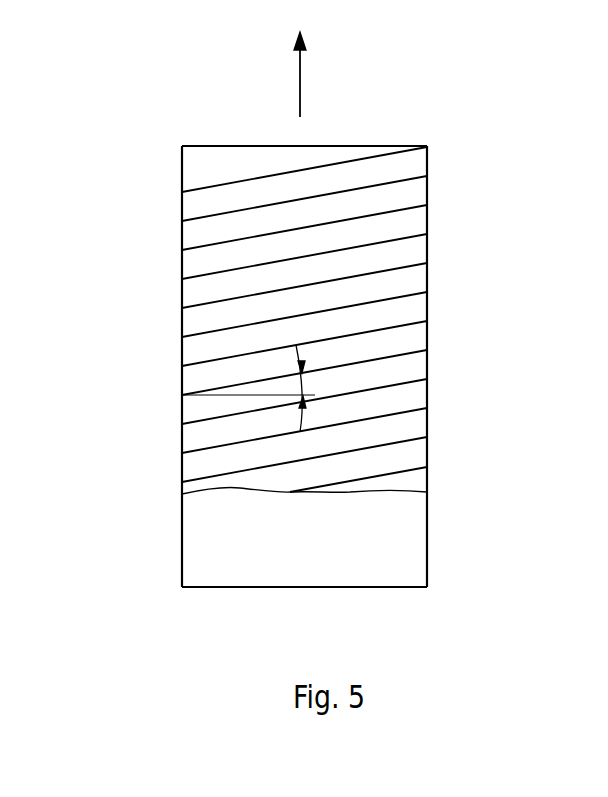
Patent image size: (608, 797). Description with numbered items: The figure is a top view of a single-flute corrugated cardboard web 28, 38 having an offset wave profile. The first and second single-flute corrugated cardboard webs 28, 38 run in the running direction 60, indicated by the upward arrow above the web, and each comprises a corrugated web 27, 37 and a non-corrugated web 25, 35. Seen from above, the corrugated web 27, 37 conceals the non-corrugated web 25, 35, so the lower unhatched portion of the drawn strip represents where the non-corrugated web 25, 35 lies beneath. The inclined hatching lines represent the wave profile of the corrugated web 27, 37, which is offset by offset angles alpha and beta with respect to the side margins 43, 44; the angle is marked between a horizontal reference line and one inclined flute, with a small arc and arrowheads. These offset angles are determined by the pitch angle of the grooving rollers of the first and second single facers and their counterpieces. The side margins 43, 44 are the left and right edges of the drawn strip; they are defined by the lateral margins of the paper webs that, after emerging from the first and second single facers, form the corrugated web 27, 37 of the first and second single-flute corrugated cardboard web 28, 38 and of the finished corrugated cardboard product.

The side margin 44 is at (181, 183).
The side margin 43 is at (427, 182).
The running direction 60 is at (300, 80).
The first single-flute corrugated cardboard web 28 is at (383, 319).
The second single-flute corrugated cardboard web 38 is at (383, 319).
The corrugated web 27 is at (369, 319).
The corrugated web 37 is at (407, 344).
The non-corrugated web 25 is at (383, 537).
The non-corrugated web 35 is at (445, 537).